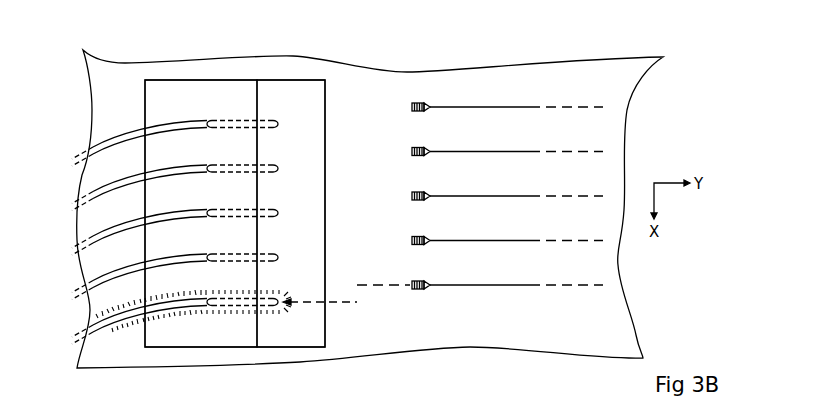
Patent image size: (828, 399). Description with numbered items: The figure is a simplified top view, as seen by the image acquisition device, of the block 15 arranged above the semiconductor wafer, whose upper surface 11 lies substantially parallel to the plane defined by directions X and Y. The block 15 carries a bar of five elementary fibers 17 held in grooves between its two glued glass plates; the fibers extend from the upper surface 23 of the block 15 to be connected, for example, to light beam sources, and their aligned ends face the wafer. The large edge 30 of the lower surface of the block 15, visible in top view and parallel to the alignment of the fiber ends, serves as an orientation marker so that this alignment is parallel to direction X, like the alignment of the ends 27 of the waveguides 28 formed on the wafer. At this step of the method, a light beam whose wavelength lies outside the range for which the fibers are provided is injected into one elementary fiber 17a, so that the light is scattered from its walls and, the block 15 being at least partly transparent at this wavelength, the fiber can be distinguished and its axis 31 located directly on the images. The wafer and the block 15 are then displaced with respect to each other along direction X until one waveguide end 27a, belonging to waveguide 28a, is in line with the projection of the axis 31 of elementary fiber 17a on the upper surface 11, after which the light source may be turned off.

The upper surface 11 is at (378, 73).
The block 15 is at (293, 80).
The elementary fibers 17 is at (233, 120).
The elementary fiber 17a is at (234, 298).
The upper surface 23 is at (197, 87).
The ends of waveguides 27 is at (413, 104).
The end of waveguide 27a is at (412, 281).
The waveguides 28 is at (494, 107).
The waveguide 28a is at (494, 285).
The large edge 30 is at (326, 152).
The axis 31 is at (338, 306).